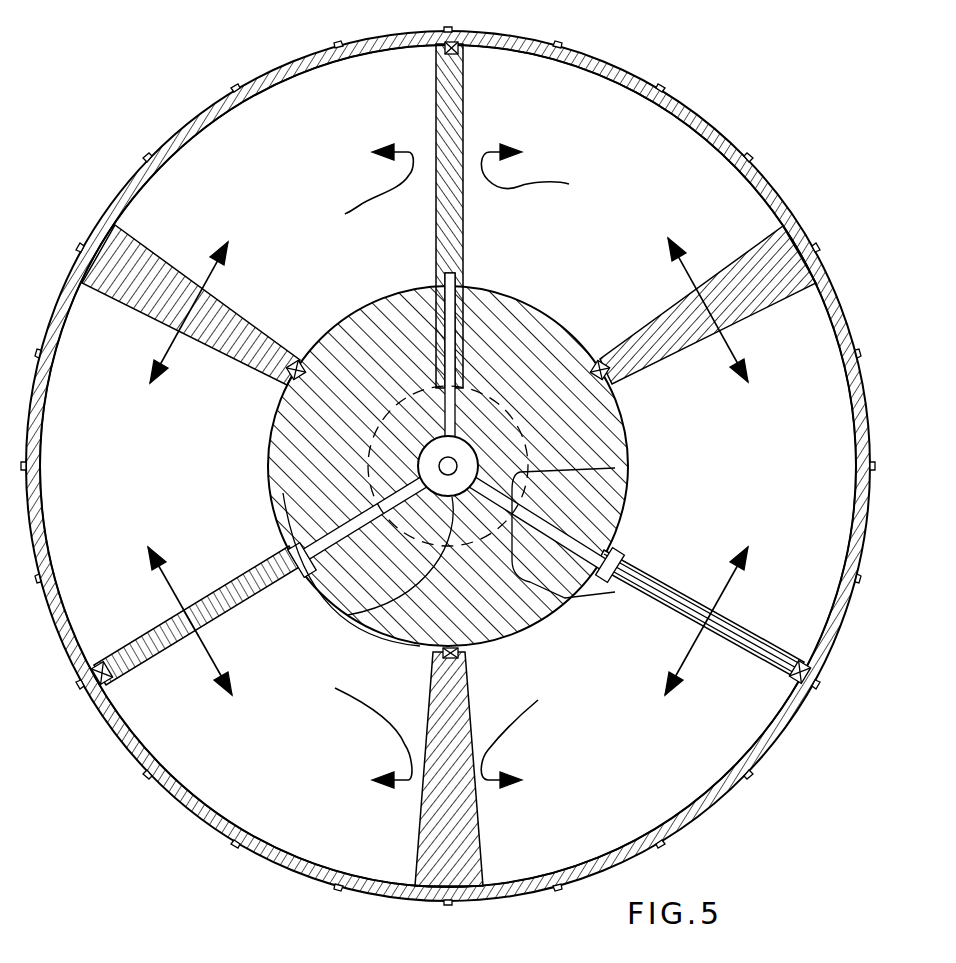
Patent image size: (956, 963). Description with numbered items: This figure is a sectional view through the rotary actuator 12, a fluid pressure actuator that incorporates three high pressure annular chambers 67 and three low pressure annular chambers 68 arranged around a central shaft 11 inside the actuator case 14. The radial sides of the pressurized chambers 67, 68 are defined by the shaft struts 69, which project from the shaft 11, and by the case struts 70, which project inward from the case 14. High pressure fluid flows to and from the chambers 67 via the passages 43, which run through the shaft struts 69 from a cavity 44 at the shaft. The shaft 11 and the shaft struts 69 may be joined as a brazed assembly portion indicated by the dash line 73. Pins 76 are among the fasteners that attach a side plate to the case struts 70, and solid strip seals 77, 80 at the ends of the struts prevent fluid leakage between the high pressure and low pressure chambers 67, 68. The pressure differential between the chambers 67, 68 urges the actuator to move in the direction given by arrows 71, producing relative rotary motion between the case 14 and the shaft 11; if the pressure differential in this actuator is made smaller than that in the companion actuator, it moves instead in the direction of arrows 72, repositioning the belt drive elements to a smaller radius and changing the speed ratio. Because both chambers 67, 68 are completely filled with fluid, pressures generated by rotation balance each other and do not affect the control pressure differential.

The shaft 11 is at (620, 411).
The rotary actuator 12 is at (270, 44).
The actuator case 14 is at (630, 58).
The passages 43 is at (462, 345).
The cavity 44 is at (345, 616).
The high pressure annular chambers 67 is at (655, 136).
The low pressure annular chambers 68 is at (310, 98).
The shaft struts 69 is at (480, 92).
The case struts 70 is at (160, 239).
The arrows 71 is at (198, 294).
The arrows 72 is at (675, 265).
The dash line 73 is at (590, 470).
The pins 76 is at (452, 30).
The solid strip seal 77 is at (444, 56).
The solid strip seal 80 is at (325, 378).